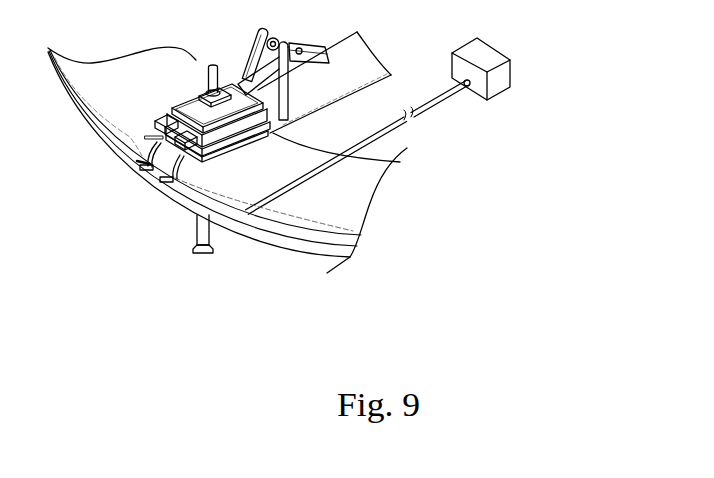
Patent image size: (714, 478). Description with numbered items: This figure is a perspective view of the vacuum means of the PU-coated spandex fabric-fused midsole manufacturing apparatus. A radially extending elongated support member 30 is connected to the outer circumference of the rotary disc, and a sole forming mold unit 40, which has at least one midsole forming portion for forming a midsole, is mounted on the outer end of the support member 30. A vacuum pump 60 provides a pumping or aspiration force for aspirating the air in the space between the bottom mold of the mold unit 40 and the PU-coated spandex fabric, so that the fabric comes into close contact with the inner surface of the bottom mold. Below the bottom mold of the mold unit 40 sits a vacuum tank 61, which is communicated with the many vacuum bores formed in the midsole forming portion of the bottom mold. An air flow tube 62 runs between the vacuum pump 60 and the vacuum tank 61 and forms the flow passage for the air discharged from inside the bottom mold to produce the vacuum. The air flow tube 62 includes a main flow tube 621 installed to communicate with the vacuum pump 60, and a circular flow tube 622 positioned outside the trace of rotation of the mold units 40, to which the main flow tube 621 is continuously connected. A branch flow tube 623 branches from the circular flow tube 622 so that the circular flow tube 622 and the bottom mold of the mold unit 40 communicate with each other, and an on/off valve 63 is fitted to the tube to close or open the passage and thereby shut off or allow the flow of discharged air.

The support member 30 is at (357, 34).
The sole forming mold unit 40 is at (178, 93).
The vacuum pump 60 is at (486, 52).
The vacuum tank 61 is at (243, 146).
The air flow tube 62 is at (430, 117).
The main flow tube 621 is at (372, 142).
The circular flow tube 622 is at (340, 231).
The branch flow tube 623 is at (190, 171).
The on/off valve 63 is at (142, 158).